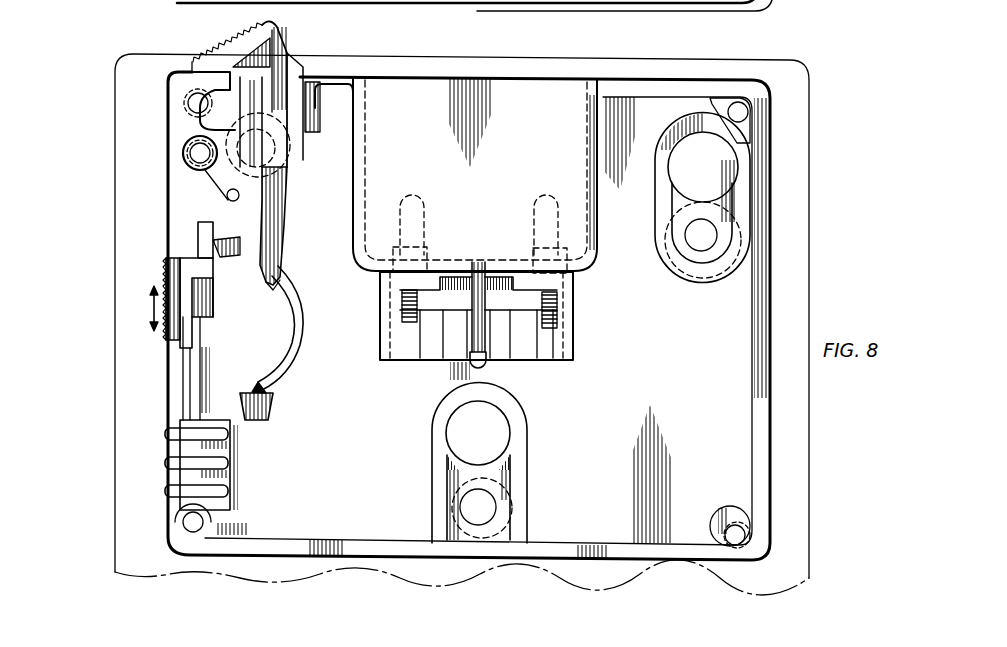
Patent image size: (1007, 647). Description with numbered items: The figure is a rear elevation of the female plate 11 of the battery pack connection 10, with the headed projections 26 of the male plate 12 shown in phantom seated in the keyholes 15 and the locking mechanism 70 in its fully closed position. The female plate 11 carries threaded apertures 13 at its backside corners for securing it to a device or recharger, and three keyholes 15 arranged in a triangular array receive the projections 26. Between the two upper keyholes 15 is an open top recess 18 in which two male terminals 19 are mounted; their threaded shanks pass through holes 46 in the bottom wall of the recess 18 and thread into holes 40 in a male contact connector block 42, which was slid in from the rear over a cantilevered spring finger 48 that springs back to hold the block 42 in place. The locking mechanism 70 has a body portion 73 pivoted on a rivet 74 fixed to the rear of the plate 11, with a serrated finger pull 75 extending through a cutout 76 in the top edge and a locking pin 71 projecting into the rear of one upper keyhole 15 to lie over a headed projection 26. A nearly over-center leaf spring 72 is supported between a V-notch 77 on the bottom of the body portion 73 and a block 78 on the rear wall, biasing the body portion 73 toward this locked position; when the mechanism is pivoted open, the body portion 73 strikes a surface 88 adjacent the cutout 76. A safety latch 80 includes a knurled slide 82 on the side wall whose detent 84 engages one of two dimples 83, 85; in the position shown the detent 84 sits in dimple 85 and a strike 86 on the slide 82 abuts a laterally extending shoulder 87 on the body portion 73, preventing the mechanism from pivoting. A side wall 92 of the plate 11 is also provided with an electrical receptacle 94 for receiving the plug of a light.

The battery pack connection 10 is at (200, 153).
The female plate 11 is at (771, 290).
The male plate 12 is at (493, 22).
The threaded apertures 13 is at (78, 170).
The keyholes 15 is at (665, 255).
The open top recess 18 is at (607, 188).
The male terminals 19 is at (432, 186).
The projections 26 is at (296, 165).
The holes 40 is at (420, 283).
The male contact connector block 42 is at (480, 307).
The holes 46 is at (385, 275).
The cantilevered spring finger 48 is at (490, 367).
The locking mechanism 70 is at (327, 128).
The locking pin 71 is at (227, 198).
The leaf spring 72 is at (303, 352).
The body portion 73 is at (284, 52).
The rivet 74 is at (200, 135).
The serrated finger pull 75 is at (235, 40).
The cutout 76 is at (310, 78).
The V-notch 77 is at (273, 290).
The block 78 is at (268, 415).
The safety latch 80 is at (156, 342).
The slide 82 is at (197, 320).
The dimple 83 is at (192, 280).
The detent 84 is at (182, 270).
The dimple 85 is at (196, 258).
The strike 86 is at (197, 232).
The shoulder 87 is at (232, 272).
The surface 88 is at (356, 90).
The side wall 92 is at (170, 527).
The electrical receptacle 94 is at (222, 468).